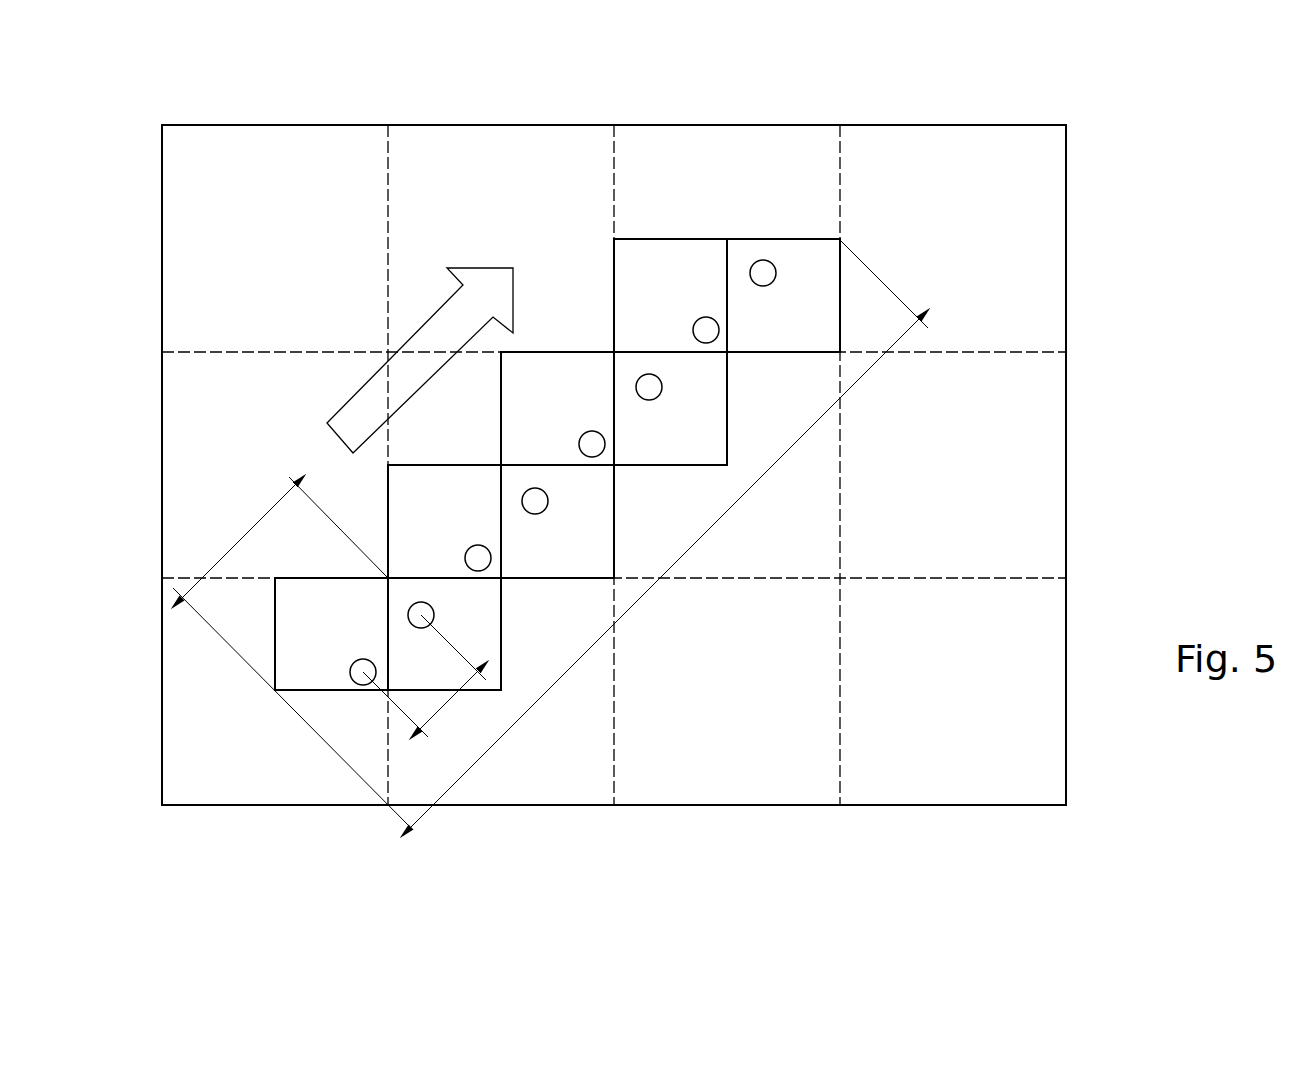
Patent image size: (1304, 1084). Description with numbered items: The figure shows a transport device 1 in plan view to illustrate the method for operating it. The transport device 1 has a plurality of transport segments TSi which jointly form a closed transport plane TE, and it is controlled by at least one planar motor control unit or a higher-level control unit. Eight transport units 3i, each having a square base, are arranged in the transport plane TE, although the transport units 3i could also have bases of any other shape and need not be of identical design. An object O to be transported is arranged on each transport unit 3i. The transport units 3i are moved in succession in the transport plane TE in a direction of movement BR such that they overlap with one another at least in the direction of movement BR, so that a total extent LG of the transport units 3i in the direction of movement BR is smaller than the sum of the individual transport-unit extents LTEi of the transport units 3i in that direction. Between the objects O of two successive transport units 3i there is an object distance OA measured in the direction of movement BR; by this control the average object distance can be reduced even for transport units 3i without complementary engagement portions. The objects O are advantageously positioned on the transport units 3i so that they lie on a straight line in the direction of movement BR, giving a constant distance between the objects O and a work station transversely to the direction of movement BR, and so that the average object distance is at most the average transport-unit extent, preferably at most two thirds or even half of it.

The transport device 1 is at (1134, 114).
The transport unit 3i is at (538, 448).
The object O is at (592, 444).
The transport segment TSi is at (1012, 284).
The transport plane TE is at (968, 487).
The direction of movement BR is at (420, 360).
The transport-unit extent LTEi is at (293, 653).
The object distance OA is at (424, 676).
The total extent LG is at (669, 533).